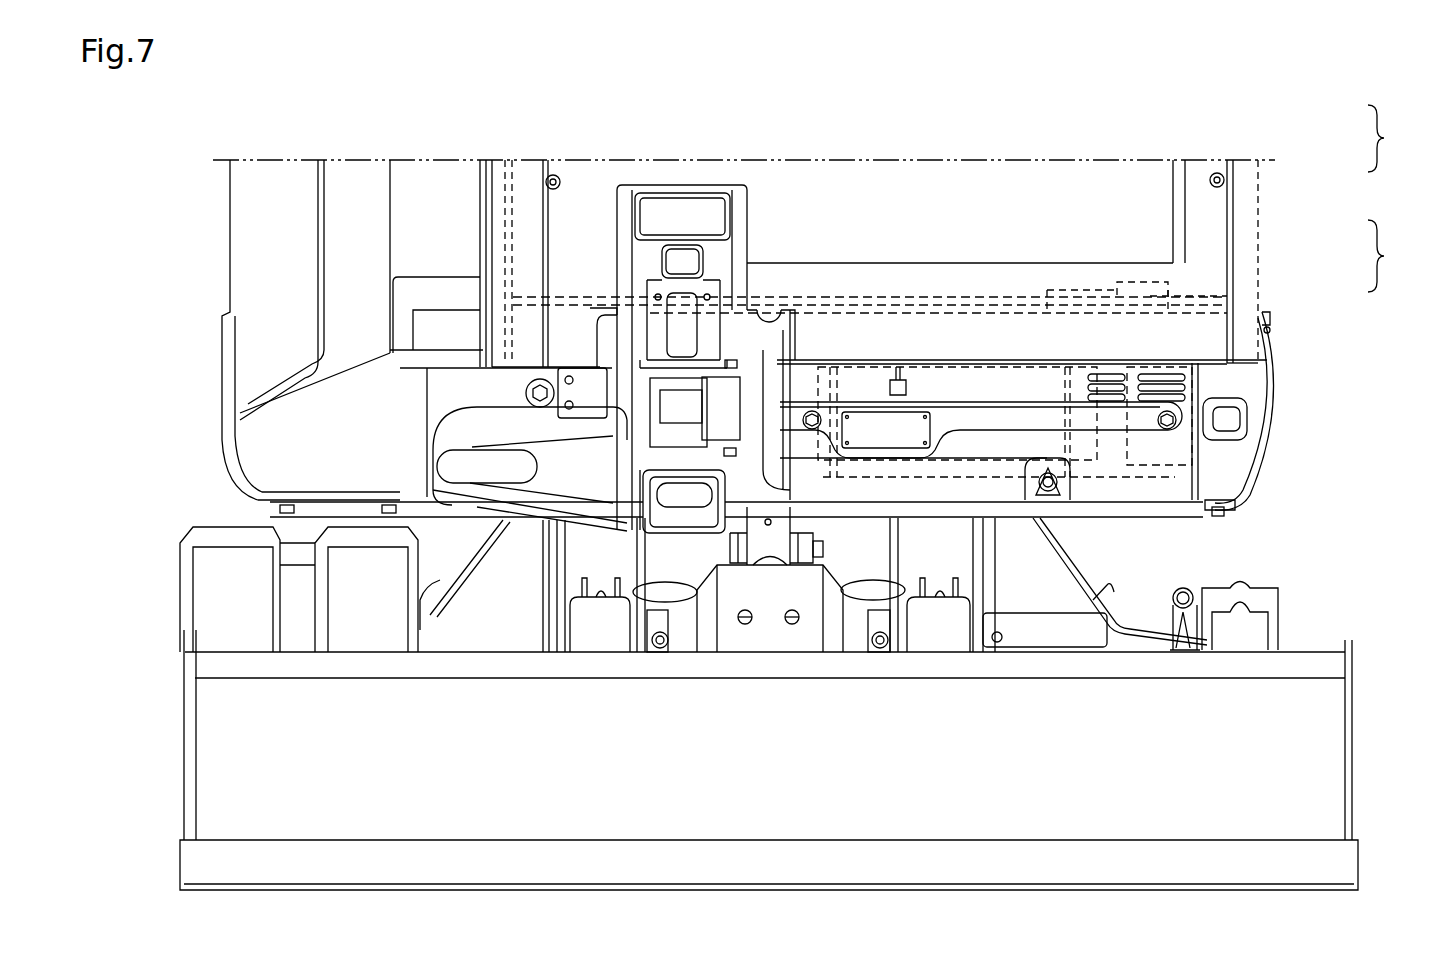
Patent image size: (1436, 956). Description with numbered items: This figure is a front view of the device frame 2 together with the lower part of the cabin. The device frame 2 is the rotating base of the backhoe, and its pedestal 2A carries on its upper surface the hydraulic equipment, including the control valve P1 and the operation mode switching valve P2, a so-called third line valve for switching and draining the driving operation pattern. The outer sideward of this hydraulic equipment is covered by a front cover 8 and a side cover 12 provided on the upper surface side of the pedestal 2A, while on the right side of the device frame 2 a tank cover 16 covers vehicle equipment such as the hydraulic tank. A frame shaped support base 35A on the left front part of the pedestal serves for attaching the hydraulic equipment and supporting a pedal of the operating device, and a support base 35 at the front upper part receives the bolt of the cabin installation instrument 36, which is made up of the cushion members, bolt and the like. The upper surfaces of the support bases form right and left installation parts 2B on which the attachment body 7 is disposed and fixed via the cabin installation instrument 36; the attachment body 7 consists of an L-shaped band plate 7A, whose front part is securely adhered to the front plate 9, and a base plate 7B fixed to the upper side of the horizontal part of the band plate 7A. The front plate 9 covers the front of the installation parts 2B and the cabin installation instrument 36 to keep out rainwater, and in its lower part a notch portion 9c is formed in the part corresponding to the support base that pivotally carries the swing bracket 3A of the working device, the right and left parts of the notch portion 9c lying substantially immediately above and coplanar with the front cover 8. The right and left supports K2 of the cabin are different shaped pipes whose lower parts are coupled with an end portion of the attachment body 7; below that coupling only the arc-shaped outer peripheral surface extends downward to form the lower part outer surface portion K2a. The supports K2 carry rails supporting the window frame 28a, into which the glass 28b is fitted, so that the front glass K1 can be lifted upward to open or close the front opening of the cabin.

The tank cover 16 is at (273, 232).
The support base 35 is at (610, 370).
The supports K2 is at (528, 198).
The cabin installation instrument 36 is at (611, 278).
The installation parts 2B is at (604, 302).
The swing bracket 3A is at (740, 218).
The notch portion 9c is at (786, 310).
The front plate 9 is at (845, 260).
The frame shaped support base 35A is at (880, 293).
The control valve P1 is at (978, 360).
The window frame 28a is at (1197, 183).
The glass 28b is at (1150, 215).
The front glass K1 is at (1299, 184).
The base plate 7B is at (1160, 295).
The band plate 7A is at (1192, 303).
The attachment body 7 is at (1389, 256).
The lower part outer surface portion K2a is at (1245, 347).
The side cover 12 is at (1272, 374).
The operation mode switching valve P2 is at (1263, 413).
The front cover 8 is at (1155, 447).
The pedestal 2A is at (1170, 511).
The device frame 2 is at (1120, 520).